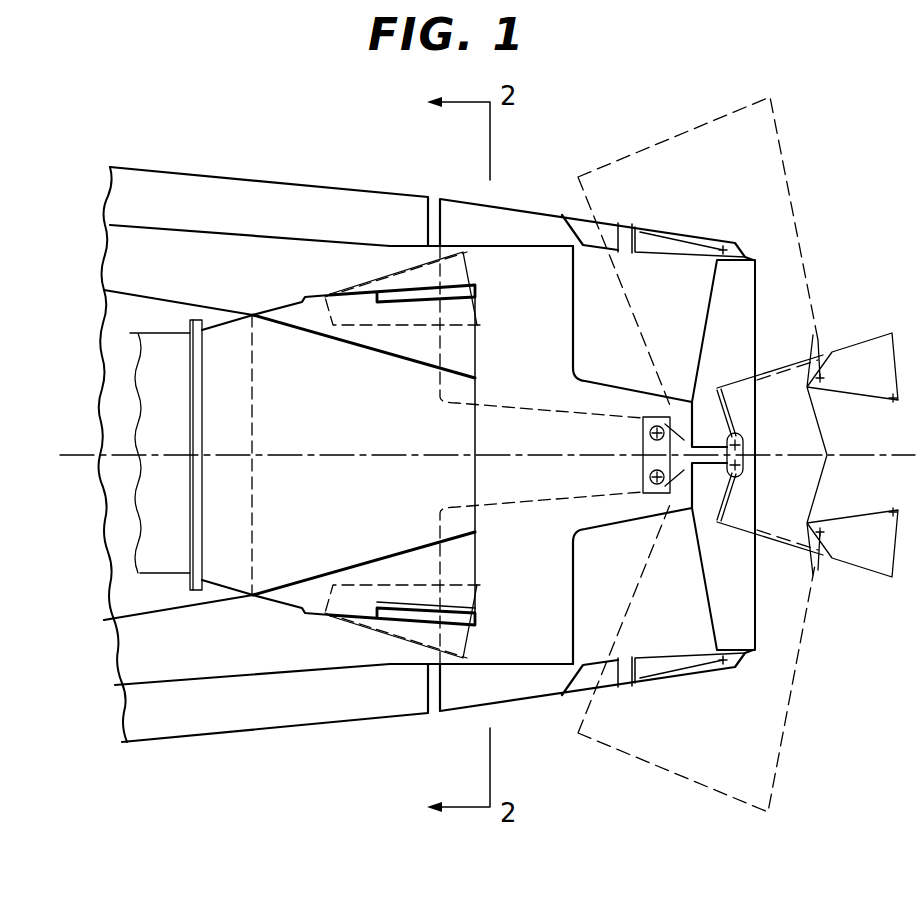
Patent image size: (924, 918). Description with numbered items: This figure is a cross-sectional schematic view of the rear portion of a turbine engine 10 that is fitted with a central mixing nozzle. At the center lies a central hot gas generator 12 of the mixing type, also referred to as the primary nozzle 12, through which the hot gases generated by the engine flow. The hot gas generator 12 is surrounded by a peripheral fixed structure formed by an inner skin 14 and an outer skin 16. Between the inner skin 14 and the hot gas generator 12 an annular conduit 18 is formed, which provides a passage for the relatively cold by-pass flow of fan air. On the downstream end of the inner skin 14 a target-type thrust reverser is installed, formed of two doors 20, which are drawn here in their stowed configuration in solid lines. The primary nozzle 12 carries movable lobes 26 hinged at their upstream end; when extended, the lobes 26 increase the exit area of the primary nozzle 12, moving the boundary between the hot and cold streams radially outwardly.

The turbine engine 10 is at (267, 150).
The central hot gas generator 12 is at (283, 553).
The inner skin 14 is at (272, 238).
The outer skin 16 is at (297, 183).
The annular conduit 18 is at (328, 650).
The thrust reverser doors 20 is at (517, 220).
The movable lobes 26 is at (460, 627).